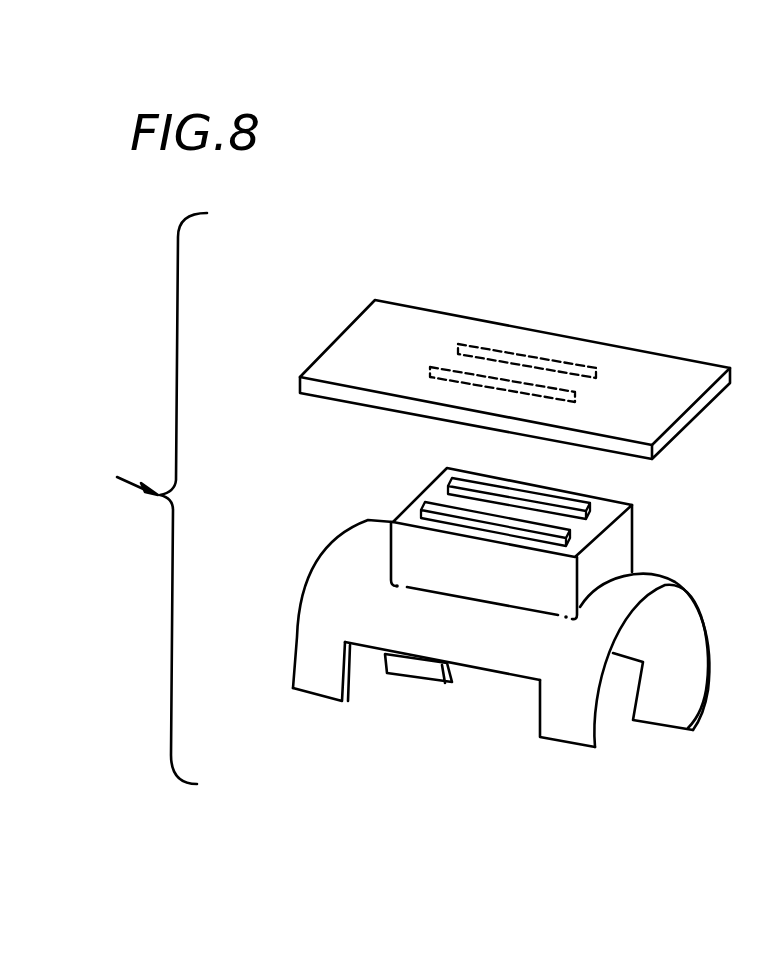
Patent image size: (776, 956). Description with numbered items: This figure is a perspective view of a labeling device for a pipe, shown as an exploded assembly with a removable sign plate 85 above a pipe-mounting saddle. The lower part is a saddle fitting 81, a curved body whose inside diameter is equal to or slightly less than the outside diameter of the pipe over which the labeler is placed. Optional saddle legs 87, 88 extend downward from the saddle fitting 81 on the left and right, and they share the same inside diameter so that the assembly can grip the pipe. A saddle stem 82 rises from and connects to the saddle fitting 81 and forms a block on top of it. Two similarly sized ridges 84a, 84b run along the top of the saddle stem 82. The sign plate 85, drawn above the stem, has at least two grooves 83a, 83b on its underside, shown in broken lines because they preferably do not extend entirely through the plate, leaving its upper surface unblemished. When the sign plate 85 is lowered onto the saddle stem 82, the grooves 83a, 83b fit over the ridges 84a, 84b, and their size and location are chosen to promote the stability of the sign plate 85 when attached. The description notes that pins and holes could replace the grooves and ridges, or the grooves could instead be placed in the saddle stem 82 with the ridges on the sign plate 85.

The saddle fitting 81 is at (333, 575).
The saddle stem 82 is at (627, 543).
The groove 83a is at (442, 377).
The groove 83b is at (523, 350).
The ridge 84a is at (580, 490).
The ridge 84b is at (437, 503).
The sign plate 85 is at (405, 305).
The saddle leg 87 is at (307, 666).
The saddle leg 88 is at (582, 727).